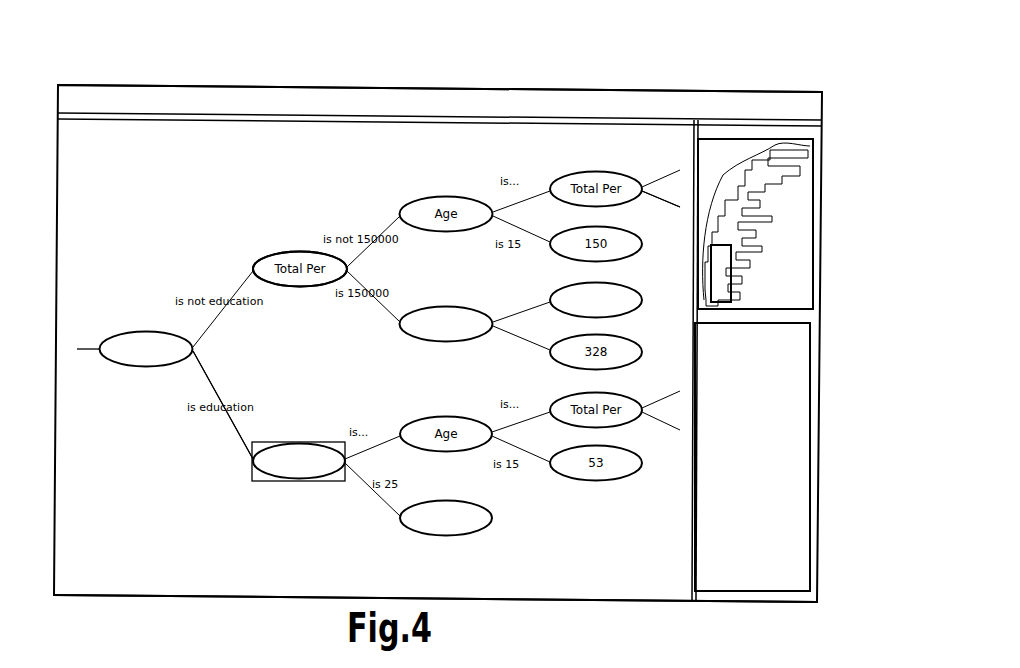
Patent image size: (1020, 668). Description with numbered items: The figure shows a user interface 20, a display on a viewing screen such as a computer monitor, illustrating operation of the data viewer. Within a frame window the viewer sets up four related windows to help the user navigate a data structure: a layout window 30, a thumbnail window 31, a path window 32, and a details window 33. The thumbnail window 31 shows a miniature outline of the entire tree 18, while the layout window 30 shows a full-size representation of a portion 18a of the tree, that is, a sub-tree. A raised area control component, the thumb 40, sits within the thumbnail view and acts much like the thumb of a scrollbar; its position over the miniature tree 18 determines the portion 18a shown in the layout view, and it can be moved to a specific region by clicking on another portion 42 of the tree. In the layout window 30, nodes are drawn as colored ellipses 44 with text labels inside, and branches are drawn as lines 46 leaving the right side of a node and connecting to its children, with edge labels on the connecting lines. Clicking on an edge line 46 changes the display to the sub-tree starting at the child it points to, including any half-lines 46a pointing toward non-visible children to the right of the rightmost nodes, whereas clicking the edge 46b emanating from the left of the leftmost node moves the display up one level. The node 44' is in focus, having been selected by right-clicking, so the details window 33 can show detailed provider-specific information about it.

The user interface 20 is at (420, 69).
The layout window 30 is at (134, 595).
The path window 32 is at (93, 72).
The thumbnail window 31 is at (749, 140).
The tree 18 is at (802, 263).
The portion of the tree 18a is at (340, 226).
The portion of the tree 42 is at (742, 213).
The thumb 40 is at (748, 270).
The details window 33 is at (814, 506).
The node 44 is at (330, 435).
The node in focus 44' is at (298, 496).
The edge line 46 is at (208, 380).
The half-line 46a is at (661, 198).
The edge 46b is at (86, 345).